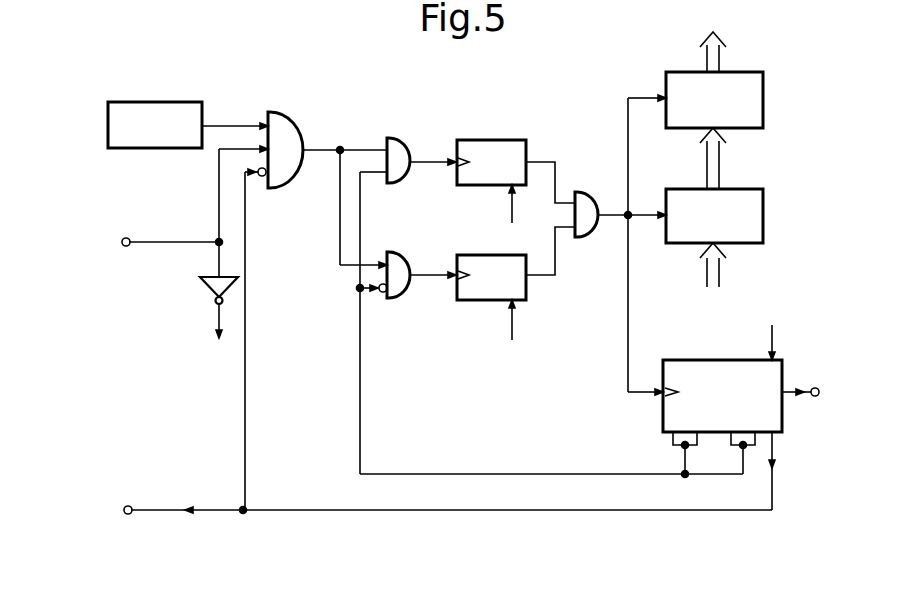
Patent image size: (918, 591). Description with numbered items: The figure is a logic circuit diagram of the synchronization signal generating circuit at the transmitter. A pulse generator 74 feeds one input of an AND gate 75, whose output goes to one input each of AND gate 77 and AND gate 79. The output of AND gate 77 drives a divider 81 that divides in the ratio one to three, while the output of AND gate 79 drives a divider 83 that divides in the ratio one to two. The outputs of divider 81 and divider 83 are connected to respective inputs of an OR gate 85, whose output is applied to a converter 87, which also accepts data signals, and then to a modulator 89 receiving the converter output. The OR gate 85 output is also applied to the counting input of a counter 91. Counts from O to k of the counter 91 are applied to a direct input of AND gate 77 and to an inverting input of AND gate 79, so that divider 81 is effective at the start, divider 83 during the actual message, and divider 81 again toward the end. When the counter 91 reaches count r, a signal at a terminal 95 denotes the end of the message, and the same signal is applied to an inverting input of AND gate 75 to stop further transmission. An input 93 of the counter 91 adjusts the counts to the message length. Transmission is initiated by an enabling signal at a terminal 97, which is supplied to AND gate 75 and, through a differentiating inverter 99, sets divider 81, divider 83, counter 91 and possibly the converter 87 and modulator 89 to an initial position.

The pulse generator 74 is at (163, 102).
The AND gate 75 is at (282, 112).
The AND gate 77 is at (395, 138).
The AND gate 79 is at (398, 252).
The divider 81 is at (505, 140).
The divider 83 is at (492, 255).
The OR gate 85 is at (584, 192).
The converter 87 is at (670, 189).
The modulator 89 is at (668, 72).
The counter 91 is at (690, 360).
The input 93 is at (815, 388).
The terminal 95 is at (128, 506).
The terminal 97 is at (126, 246).
The differentiating inverter 99 is at (200, 290).